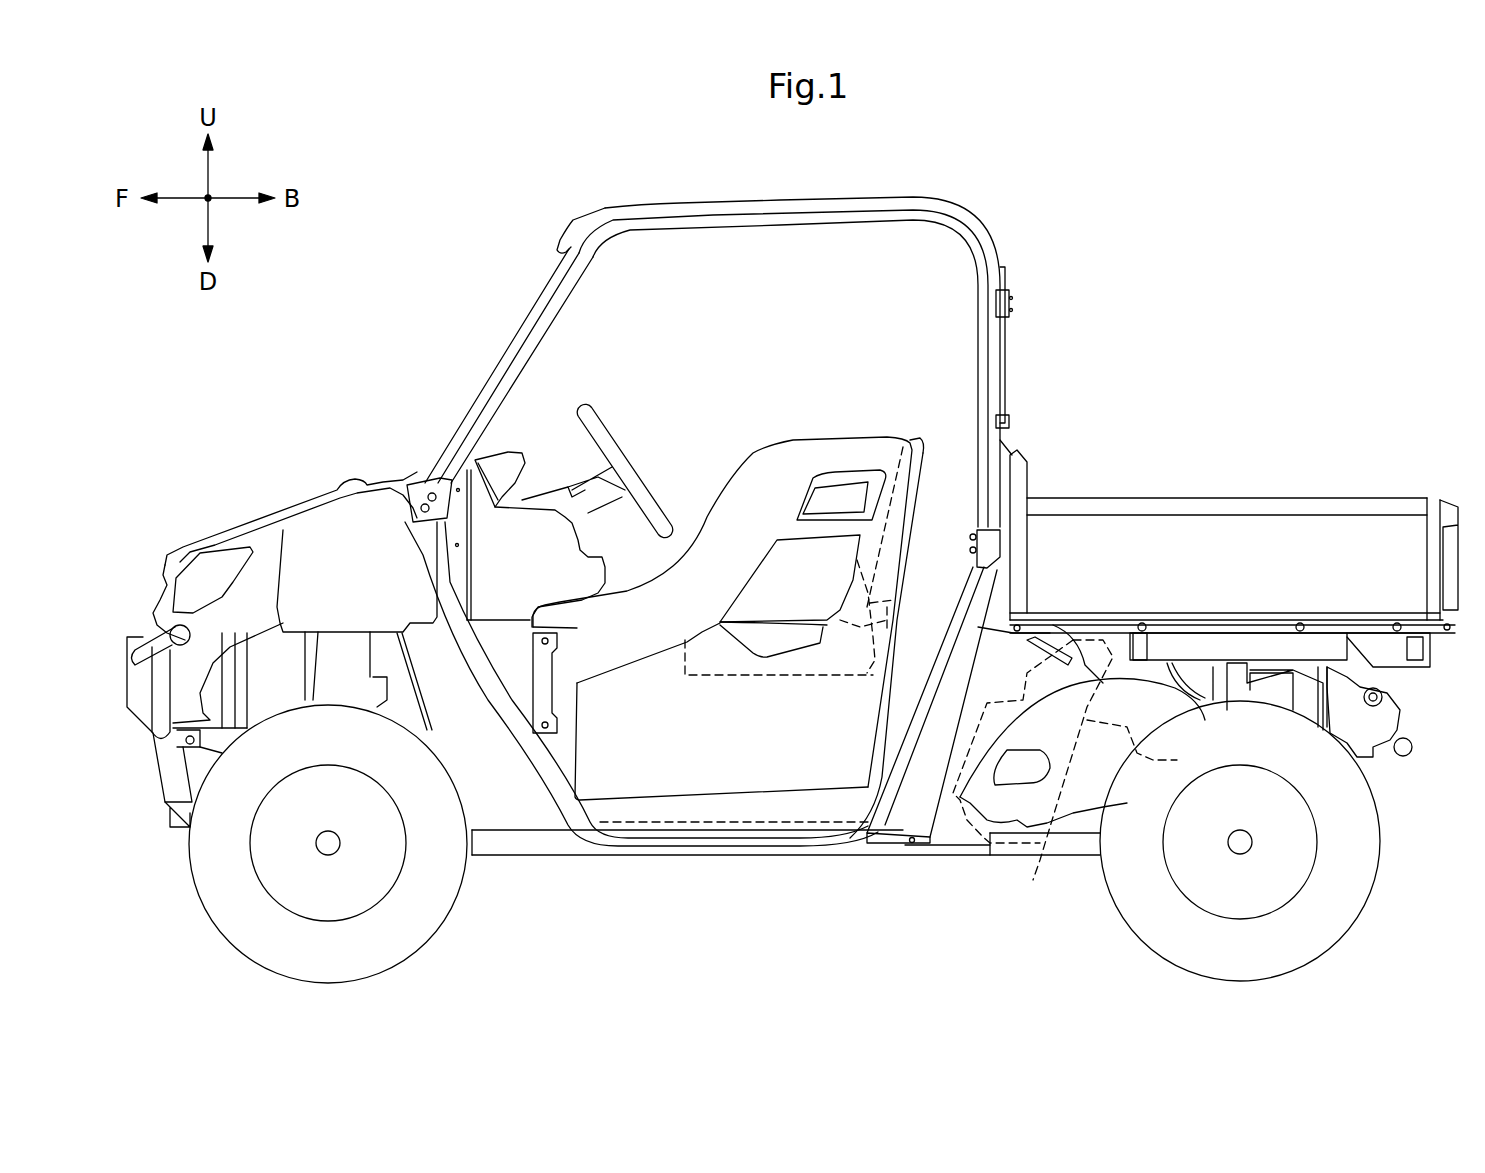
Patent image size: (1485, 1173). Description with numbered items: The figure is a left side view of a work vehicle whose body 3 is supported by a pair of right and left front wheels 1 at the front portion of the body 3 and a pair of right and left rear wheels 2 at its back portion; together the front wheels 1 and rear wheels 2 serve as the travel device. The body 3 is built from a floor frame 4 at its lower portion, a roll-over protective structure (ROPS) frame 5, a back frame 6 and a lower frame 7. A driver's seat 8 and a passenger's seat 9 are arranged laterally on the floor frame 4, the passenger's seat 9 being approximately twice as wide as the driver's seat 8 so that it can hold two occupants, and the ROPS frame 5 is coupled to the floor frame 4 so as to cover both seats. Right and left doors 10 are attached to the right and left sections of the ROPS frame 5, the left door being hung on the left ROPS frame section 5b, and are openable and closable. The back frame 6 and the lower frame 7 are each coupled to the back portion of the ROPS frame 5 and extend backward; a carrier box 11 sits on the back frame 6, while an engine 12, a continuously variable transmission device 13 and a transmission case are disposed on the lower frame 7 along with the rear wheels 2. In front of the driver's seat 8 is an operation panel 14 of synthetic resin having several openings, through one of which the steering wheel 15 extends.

The front wheels 1 is at (205, 855).
The rear wheels 2 is at (1362, 833).
The body 3 is at (826, 880).
The floor frame 4 is at (707, 807).
The roll-over protective structure (ROPS) frame 5 is at (520, 298).
The left ROPS frame section 5b is at (433, 570).
The back frame 6 is at (1260, 647).
The lower frame 7 is at (1040, 852).
The driver's seat 8 is at (790, 578).
The passenger's seat 9 is at (778, 634).
The doors 10 is at (780, 452).
The carrier box 11 is at (1160, 540).
The engine 12 is at (1151, 743).
The continuously variable transmission device 13 is at (1075, 808).
The operation panel 14 is at (512, 455).
The steering wheel 15 is at (598, 435).